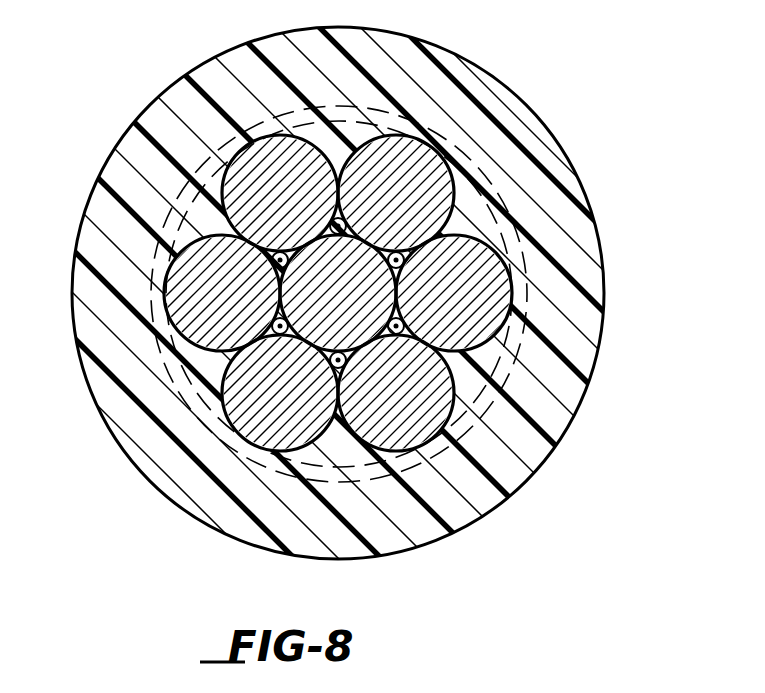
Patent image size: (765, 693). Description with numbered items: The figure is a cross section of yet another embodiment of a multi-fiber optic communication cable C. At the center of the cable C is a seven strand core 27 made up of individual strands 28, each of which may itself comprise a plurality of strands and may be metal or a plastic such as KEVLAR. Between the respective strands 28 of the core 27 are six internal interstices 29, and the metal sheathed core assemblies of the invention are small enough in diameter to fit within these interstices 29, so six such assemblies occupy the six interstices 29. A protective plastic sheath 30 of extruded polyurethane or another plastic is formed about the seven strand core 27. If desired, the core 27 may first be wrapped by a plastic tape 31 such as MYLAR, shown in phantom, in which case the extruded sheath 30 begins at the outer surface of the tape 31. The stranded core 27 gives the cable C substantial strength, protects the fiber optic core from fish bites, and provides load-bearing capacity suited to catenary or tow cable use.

The communication cable C is at (553, 134).
The core 27 is at (497, 305).
The strands 28 is at (490, 330).
The internal interstices 29 is at (500, 487).
The protective plastic sheath 30 is at (493, 97).
The plastic tape 31 is at (540, 243).